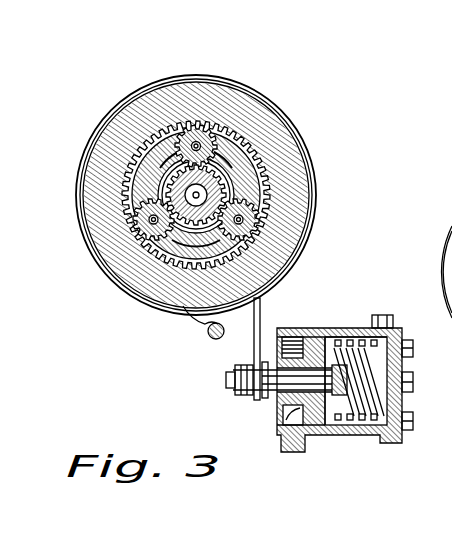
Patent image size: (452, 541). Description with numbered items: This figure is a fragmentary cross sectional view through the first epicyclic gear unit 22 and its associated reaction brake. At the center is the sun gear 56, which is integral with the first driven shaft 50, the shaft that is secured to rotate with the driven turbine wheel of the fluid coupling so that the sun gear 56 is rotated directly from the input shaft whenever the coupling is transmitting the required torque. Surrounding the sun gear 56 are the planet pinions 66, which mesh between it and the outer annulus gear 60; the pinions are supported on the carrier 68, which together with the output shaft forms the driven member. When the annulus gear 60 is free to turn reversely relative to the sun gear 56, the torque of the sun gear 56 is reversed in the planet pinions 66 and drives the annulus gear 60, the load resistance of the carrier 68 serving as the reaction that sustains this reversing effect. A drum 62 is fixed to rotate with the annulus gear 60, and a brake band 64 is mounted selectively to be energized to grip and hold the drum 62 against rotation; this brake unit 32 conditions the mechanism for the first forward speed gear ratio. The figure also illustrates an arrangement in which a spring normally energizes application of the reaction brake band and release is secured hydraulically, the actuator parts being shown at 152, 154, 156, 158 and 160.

The first epicyclic gear unit 22 is at (125, 191).
The brake unit 32 is at (268, 305).
The first driven shaft 50 is at (168, 182).
The sun gear 56 is at (230, 193).
The annulus gear 60 is at (210, 120).
The drum 62 is at (192, 92).
The brake band 64 is at (175, 82).
The planet pinions 66 is at (172, 131).
The carrier 68 is at (241, 173).
The brake housing 152 is at (226, 270).
The shaft 154 is at (292, 407).
The nut 156 is at (228, 382).
The springs 158 is at (372, 436).
The bolts 160 is at (277, 432).